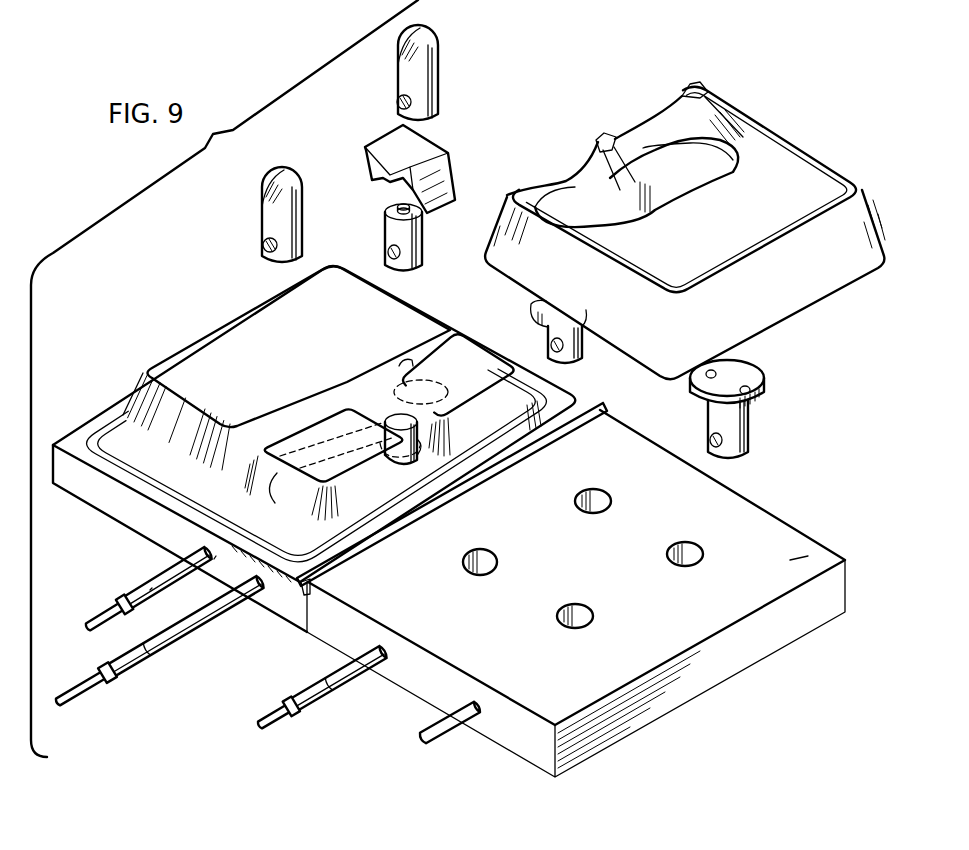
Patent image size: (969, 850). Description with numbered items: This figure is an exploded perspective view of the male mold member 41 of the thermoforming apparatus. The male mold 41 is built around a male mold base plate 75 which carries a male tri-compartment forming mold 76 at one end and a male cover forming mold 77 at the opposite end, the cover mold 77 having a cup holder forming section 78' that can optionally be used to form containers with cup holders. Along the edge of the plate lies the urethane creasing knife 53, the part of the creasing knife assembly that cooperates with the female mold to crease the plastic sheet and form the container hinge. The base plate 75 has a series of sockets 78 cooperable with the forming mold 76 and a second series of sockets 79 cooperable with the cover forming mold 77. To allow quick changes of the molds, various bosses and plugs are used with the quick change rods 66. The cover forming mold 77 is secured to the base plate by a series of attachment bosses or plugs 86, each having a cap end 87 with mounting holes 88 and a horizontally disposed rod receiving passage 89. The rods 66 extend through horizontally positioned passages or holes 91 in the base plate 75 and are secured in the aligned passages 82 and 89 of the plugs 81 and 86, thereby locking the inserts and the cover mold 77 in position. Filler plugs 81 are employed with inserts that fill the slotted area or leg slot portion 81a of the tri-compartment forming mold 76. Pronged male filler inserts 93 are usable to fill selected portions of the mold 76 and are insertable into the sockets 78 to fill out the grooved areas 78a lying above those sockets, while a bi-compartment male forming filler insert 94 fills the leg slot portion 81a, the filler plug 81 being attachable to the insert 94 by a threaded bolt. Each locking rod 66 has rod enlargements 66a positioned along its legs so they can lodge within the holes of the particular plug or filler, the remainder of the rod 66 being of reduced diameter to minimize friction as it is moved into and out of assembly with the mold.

The male mold member 41 is at (806, 556).
The urethane creasing knife 53 is at (320, 568).
The quick change rod 66 is at (106, 612).
The rod enlargement 66a is at (150, 588).
The male mold base plate 75 is at (716, 676).
The male tri-compartment forming mold 76 is at (213, 345).
The male cover forming mold 77 is at (782, 160).
The socket 78 is at (375, 445).
The cup holder forming section 78' is at (625, 131).
The grooved area 78a is at (262, 442).
The socket 79 is at (497, 563).
The filler plug 81 is at (423, 258).
The slotted area 81a is at (430, 445).
The passage 82 is at (390, 253).
The attachment boss 86 is at (565, 356).
The cap end 87 is at (752, 373).
The mounting hole 88 is at (712, 370).
The rod receiving passage 89 is at (712, 438).
The passage 91 is at (216, 556).
The pronged male filler insert 93 is at (438, 46).
The bi-compartment male forming filler insert 94 is at (438, 182).